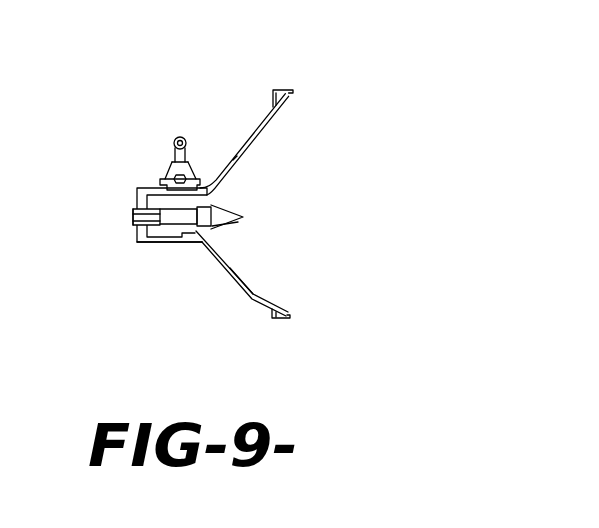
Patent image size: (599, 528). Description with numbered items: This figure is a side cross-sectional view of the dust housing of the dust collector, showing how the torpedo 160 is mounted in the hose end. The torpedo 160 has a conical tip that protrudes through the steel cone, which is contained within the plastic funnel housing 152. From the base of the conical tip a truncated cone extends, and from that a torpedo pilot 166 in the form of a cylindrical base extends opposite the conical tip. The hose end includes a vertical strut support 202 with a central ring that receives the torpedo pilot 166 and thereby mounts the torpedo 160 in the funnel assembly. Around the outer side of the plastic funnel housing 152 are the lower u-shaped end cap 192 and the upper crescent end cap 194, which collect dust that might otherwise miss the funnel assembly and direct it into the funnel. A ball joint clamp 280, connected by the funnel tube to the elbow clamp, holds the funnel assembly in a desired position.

The plastic funnel housing 152 is at (210, 252).
The torpedo 160 is at (203, 228).
The torpedo pilot 166 is at (137, 222).
The lower u-shaped end cap 192 is at (272, 309).
The upper crescent end cap 194 is at (273, 91).
The vertical strut support 202 is at (136, 200).
The ball joint clamp 280 is at (173, 160).